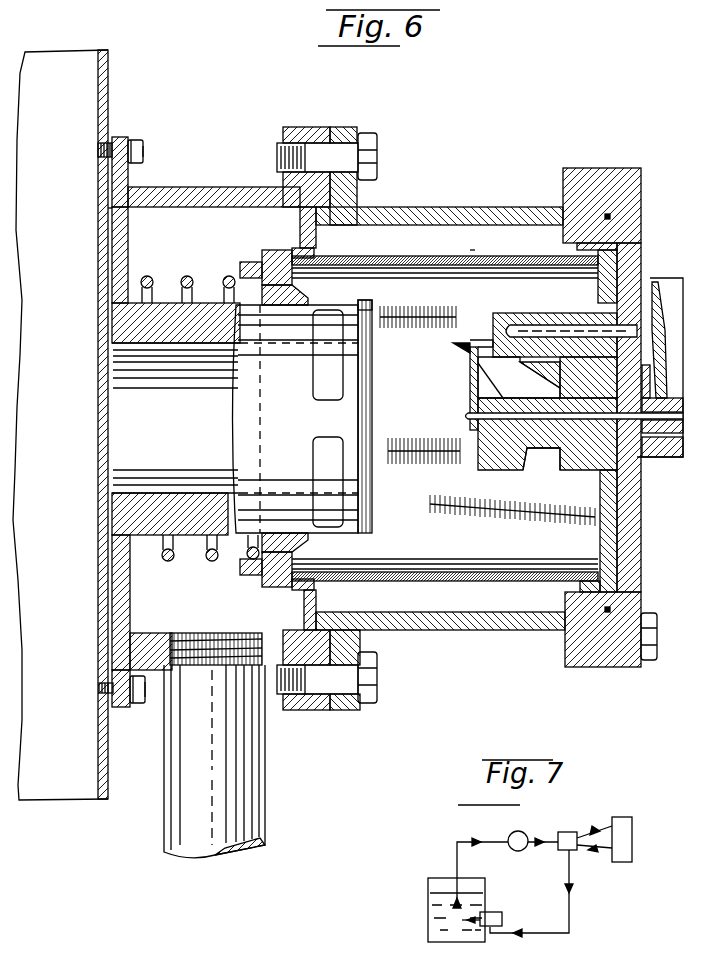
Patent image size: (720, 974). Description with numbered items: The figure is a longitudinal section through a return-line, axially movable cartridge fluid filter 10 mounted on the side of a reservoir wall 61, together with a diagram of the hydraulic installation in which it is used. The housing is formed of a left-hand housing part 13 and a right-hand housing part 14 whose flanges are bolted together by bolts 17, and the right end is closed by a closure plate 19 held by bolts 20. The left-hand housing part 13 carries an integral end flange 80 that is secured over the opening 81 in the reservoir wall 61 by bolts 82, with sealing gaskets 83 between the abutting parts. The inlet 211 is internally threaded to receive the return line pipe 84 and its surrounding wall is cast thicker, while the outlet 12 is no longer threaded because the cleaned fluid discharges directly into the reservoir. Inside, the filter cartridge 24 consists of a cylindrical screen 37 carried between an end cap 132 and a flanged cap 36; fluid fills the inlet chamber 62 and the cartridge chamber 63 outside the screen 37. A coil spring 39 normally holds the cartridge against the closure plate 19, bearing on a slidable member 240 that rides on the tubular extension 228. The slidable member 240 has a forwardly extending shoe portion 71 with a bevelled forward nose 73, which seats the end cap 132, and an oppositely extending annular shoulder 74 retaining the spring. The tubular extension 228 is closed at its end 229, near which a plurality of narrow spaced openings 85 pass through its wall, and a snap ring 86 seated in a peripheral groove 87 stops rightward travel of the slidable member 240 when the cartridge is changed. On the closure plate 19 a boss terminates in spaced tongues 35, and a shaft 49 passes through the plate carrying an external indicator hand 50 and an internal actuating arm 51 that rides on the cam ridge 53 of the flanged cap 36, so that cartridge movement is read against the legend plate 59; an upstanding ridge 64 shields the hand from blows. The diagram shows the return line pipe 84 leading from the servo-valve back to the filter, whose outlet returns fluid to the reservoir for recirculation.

In FIG. 6, the housing 10 is at (448, 196).
In FIG. 6, the outlet 12 is at (133, 347).
In FIG. 6, the left-hand housing part 13 is at (236, 187).
In FIG. 6, the right-hand housing part 14 is at (497, 207).
In FIG. 6, the bolts 17 is at (347, 153).
In FIG. 6, the closure plate 19 is at (643, 182).
In FIG. 6, the bolts 20 is at (647, 614).
In FIG. 6, the filter cartridge 24 is at (474, 250).
In FIG. 6, the tongues 35 is at (528, 471).
In FIG. 6, the flanged cap 36 is at (600, 538).
In FIG. 6, the cylindrical screen 37 is at (415, 257).
In FIG. 6, the coil spring 39 is at (146, 277).
In FIG. 6, the shaft 49 is at (530, 421).
In FIG. 6, the indicator hand 50 is at (668, 363).
In FIG. 6, the actuating arm 51 is at (469, 390).
In FIG. 6, the cam ridge 53 is at (456, 352).
In FIG. 6, the legend plate 59 is at (643, 241).
In FIG. 6, the reservoir wall 61 is at (110, 77).
In FIG. 6, the inlet chamber 62 is at (192, 212).
In FIG. 6, the cartridge chamber 63 is at (390, 233).
In FIG. 6, the upstanding ridge 64 is at (672, 283).
In FIG. 6, the shoe portion 71 is at (283, 305).
In FIG. 6, the bevelled forward nose 73 is at (306, 293).
In FIG. 6, the annular shoulder 74 is at (248, 262).
In FIG. 6, the end flange 80 is at (121, 137).
In FIG. 6, the opening 81 is at (108, 208).
In FIG. 6, the bolts 82 is at (143, 149).
In FIG. 6, the sealing gaskets 83 is at (114, 137).
In FIG. 6, the return line pipe 84 is at (166, 816).
In FIG. 7, the return line pipe 84 is at (540, 933).
In FIG. 6, the openings 85 is at (320, 410).
In FIG. 6, the snap ring 86 is at (360, 304).
In FIG. 6, the peripheral groove 87 is at (373, 371).
In FIG. 6, the end cap 132 is at (290, 252).
In FIG. 6, the inlet 211 is at (206, 645).
In FIG. 6, the tubular extension 228 is at (213, 272).
In FIG. 6, the end 229 is at (372, 320).
In FIG. 6, the slidable member 240 is at (267, 250).